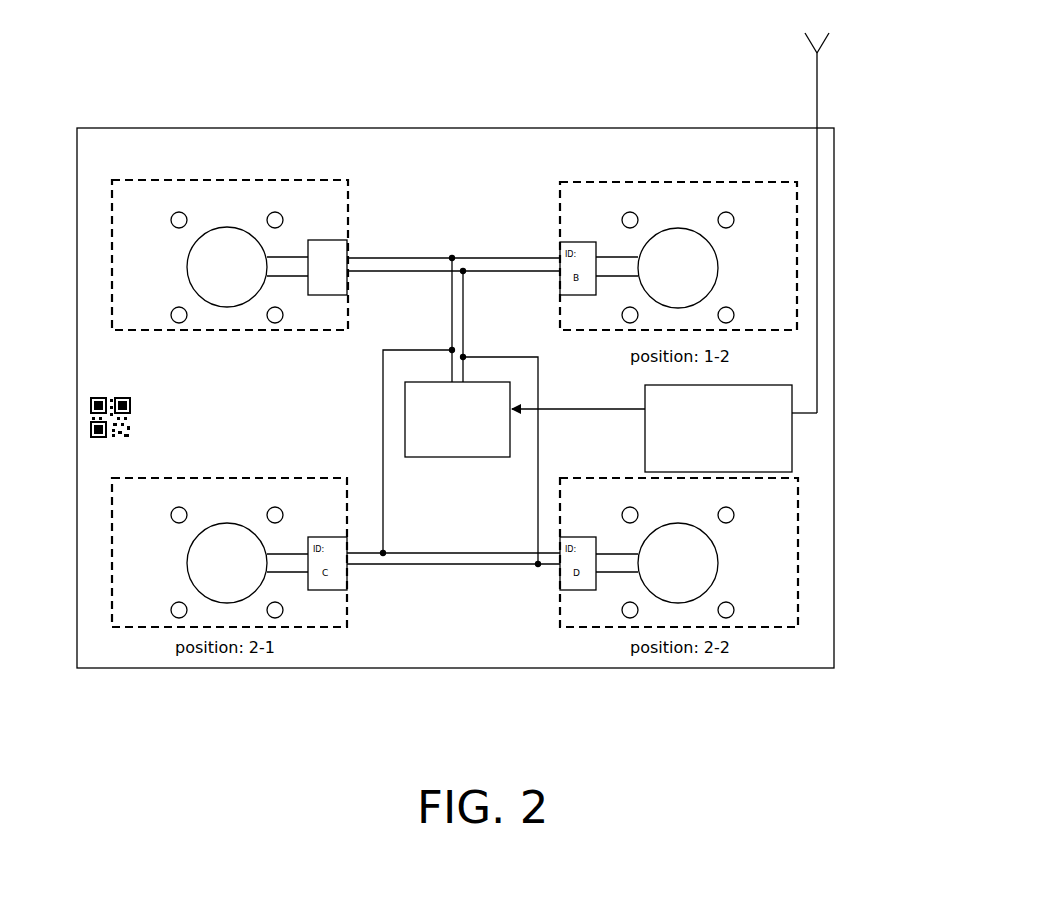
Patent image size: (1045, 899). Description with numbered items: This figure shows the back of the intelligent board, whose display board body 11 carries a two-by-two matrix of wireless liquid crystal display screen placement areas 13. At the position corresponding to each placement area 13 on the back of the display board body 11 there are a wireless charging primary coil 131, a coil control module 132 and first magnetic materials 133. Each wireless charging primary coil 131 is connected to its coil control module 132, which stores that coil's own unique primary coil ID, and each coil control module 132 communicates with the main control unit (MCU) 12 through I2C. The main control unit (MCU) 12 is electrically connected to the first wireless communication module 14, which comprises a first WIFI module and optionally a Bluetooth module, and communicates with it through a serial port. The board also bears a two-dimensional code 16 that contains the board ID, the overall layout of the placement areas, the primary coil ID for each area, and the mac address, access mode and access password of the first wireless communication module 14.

The display board body 11 is at (455, 127).
The main control unit (MCU) 12 is at (530, 254).
The wireless liquid crystal display screen placement area 13 is at (243, 207).
The wireless charging primary coil 131 is at (680, 229).
The coil control module 132 is at (321, 243).
The first magnetic material 133 is at (182, 218).
The first wireless communication module 14 is at (793, 422).
The two-dimensional code 16 is at (98, 428).